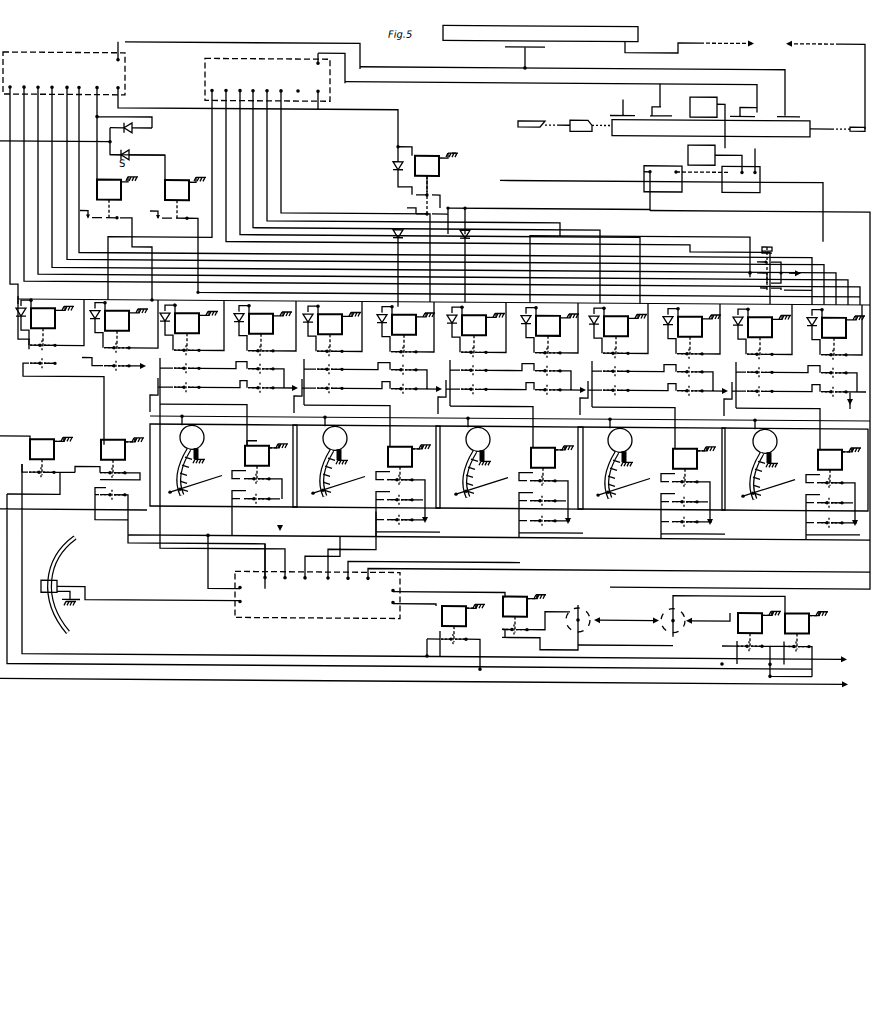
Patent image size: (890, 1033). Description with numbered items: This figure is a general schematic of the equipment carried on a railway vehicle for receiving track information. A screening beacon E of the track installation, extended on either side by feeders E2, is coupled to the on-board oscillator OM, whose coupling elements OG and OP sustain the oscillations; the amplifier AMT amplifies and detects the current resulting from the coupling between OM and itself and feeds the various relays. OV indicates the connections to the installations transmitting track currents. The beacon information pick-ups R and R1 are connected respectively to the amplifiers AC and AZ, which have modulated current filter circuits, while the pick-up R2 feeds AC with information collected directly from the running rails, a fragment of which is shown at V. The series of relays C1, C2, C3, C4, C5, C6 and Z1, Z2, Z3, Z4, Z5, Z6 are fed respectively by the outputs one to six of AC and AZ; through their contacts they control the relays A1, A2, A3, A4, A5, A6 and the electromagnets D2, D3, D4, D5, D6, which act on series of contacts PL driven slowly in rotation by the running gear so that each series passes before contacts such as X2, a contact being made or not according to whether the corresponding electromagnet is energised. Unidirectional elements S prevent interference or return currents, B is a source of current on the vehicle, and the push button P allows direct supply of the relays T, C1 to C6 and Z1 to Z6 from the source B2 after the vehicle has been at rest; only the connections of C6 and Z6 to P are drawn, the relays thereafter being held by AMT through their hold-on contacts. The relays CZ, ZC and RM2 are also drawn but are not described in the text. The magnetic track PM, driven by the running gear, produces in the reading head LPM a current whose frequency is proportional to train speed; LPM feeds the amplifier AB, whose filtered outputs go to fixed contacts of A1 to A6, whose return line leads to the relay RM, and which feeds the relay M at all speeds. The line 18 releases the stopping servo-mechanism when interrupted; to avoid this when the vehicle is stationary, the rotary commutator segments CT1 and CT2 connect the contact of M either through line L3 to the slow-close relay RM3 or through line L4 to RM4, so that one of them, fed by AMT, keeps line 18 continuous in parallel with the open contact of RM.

The running rails fragment V is at (540, 27).
The pick-up R2 is at (525, 58).
The connections to track current installations OV is at (745, 84).
The screening beacon E is at (711, 135).
The feeders E2 is at (691, 126).
The beacon information pick-up R is at (705, 108).
The beacon information pick-up R1 is at (703, 100).
The coupling element OP is at (707, 122).
The coupling element OG is at (715, 159).
The amplifier AMT is at (687, 189).
The oscillator OM is at (741, 170).
The amplifier AC is at (64, 68).
The amplifier AZ is at (267, 76).
The relay CZ is at (117, 239).
The relay ZC is at (505, 238).
The relay T is at (517, 227).
The unidirectional elements S is at (131, 132).
The push button P is at (782, 266).
The source B2 is at (809, 274).
The source of current B is at (151, 366).
The relay C1 is at (58, 370).
The relay C2 is at (198, 356).
The relay C3 is at (342, 357).
The relay C4 is at (486, 358).
The relay C5 is at (628, 359).
The relay C6 is at (772, 360).
The relay Z1 is at (120, 336).
The relay Z2 is at (268, 348).
The relay Z3 is at (411, 349).
The relay Z4 is at (555, 350).
The relay Z5 is at (697, 351).
The relay Z6 is at (834, 363).
The relay A1 is at (119, 486).
The relay A2 is at (261, 490).
The relay A3 is at (408, 491).
The relay A4 is at (551, 492).
The relay A5 is at (693, 493).
The relay A6 is at (833, 494).
The electromagnet D2 is at (223, 461).
The electromagnet D3 is at (366, 462).
The electromagnet D4 is at (509, 463).
The electromagnet D5 is at (651, 464).
The electromagnet D6 is at (795, 465).
The series of contacts PL is at (180, 460).
The contact X2 is at (202, 496).
The relay RM is at (455, 637).
The relay RM2 is at (50, 459).
The slow-close relay RM3 is at (766, 638).
The slow-close relay RM4 is at (798, 639).
The relay M is at (536, 621).
The rotary commutator segment CT1 is at (723, 618).
The rotary commutator segment CT2 is at (576, 627).
The line L3 is at (626, 614).
The line L4 is at (654, 629).
The amplifier AB is at (317, 592).
The reading head LPM is at (40, 585).
The magnetic track PM is at (62, 560).
The line 18 is at (429, 677).